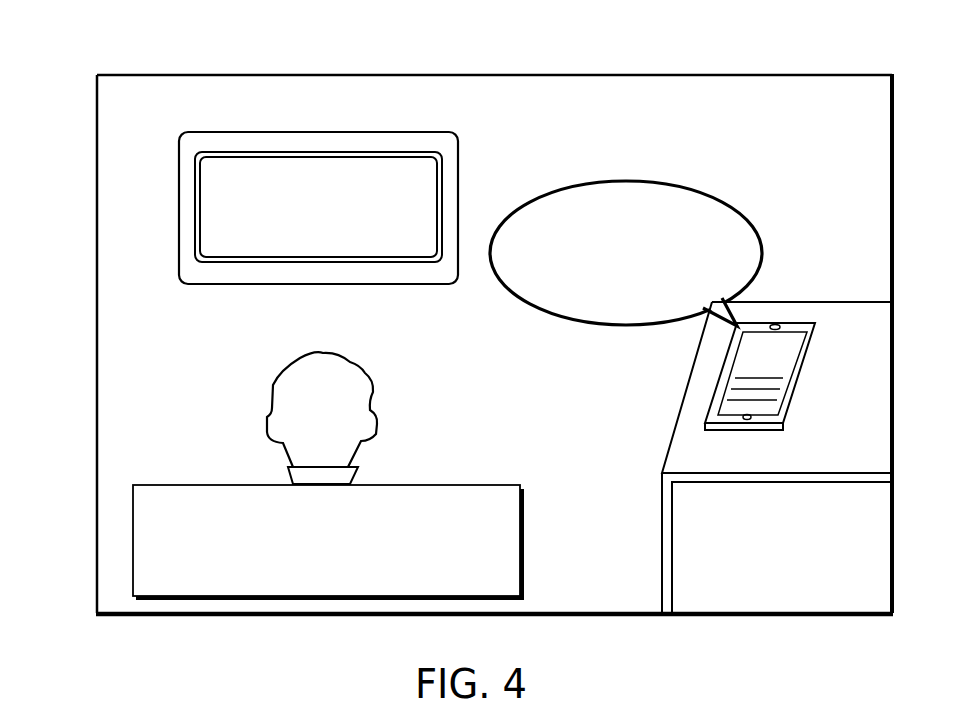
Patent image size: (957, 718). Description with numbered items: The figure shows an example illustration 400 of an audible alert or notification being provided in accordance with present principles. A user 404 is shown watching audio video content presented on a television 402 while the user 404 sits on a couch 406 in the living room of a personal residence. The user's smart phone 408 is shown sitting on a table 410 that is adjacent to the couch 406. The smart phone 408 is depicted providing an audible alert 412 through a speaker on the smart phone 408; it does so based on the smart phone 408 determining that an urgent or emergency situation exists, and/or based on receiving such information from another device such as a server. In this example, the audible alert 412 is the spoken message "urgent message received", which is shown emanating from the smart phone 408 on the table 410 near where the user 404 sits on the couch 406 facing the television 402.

The example illustration 400 is at (97, 48).
The television 402 is at (179, 205).
The user 404 is at (268, 418).
The couch 406 is at (133, 537).
The smart phone 408 is at (708, 401).
The table 410 is at (662, 543).
The audible alert 412 is at (763, 253).